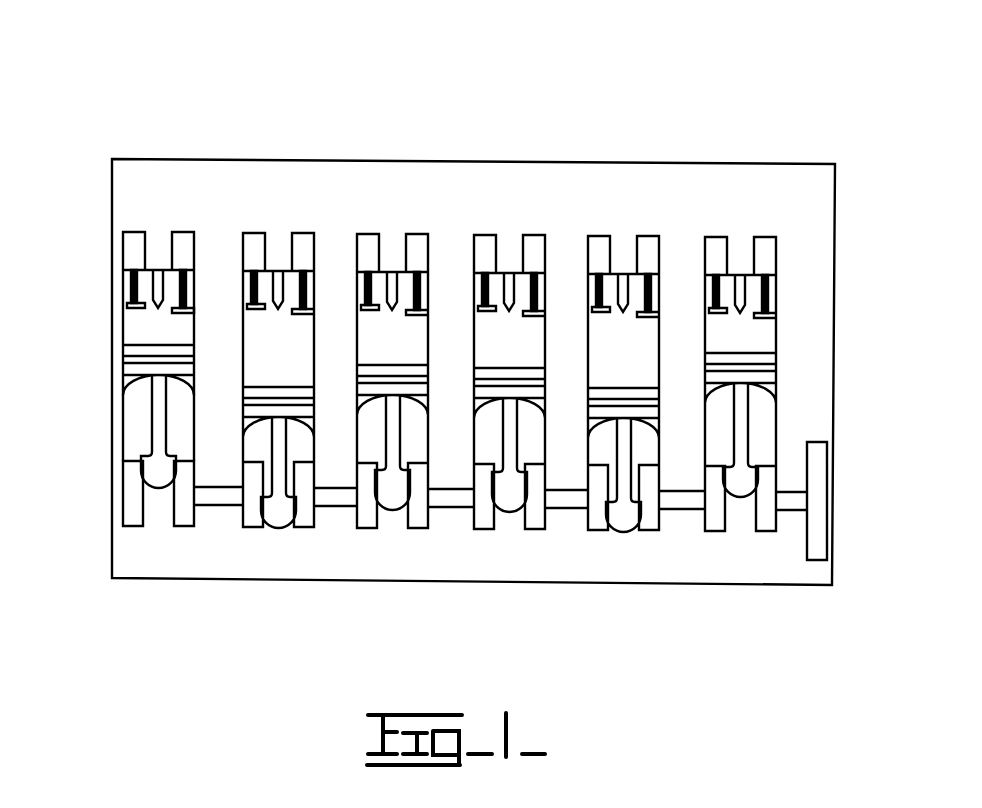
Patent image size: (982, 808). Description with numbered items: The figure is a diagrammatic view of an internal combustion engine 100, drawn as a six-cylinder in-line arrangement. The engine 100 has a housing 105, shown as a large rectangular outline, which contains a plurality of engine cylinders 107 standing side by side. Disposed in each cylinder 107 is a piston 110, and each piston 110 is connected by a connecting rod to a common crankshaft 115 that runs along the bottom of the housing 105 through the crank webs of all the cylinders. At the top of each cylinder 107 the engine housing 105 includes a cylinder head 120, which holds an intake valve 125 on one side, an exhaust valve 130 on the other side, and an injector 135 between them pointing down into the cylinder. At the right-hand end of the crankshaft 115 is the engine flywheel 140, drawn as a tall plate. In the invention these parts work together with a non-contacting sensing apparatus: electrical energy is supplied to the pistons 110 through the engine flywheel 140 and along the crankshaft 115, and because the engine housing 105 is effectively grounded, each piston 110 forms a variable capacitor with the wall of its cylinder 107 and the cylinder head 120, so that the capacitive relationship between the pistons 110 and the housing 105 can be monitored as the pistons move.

The internal combustion engine 100 is at (715, 104).
The housing 105 is at (123, 158).
The engine cylinder 107 is at (137, 422).
The piston 110 is at (168, 345).
The crankshaft 115 is at (333, 512).
The cylinder head 120 is at (119, 258).
The intake valve 125 is at (132, 280).
The exhaust valve 130 is at (187, 276).
The injector 135 is at (157, 268).
The engine flywheel 140 is at (828, 506).